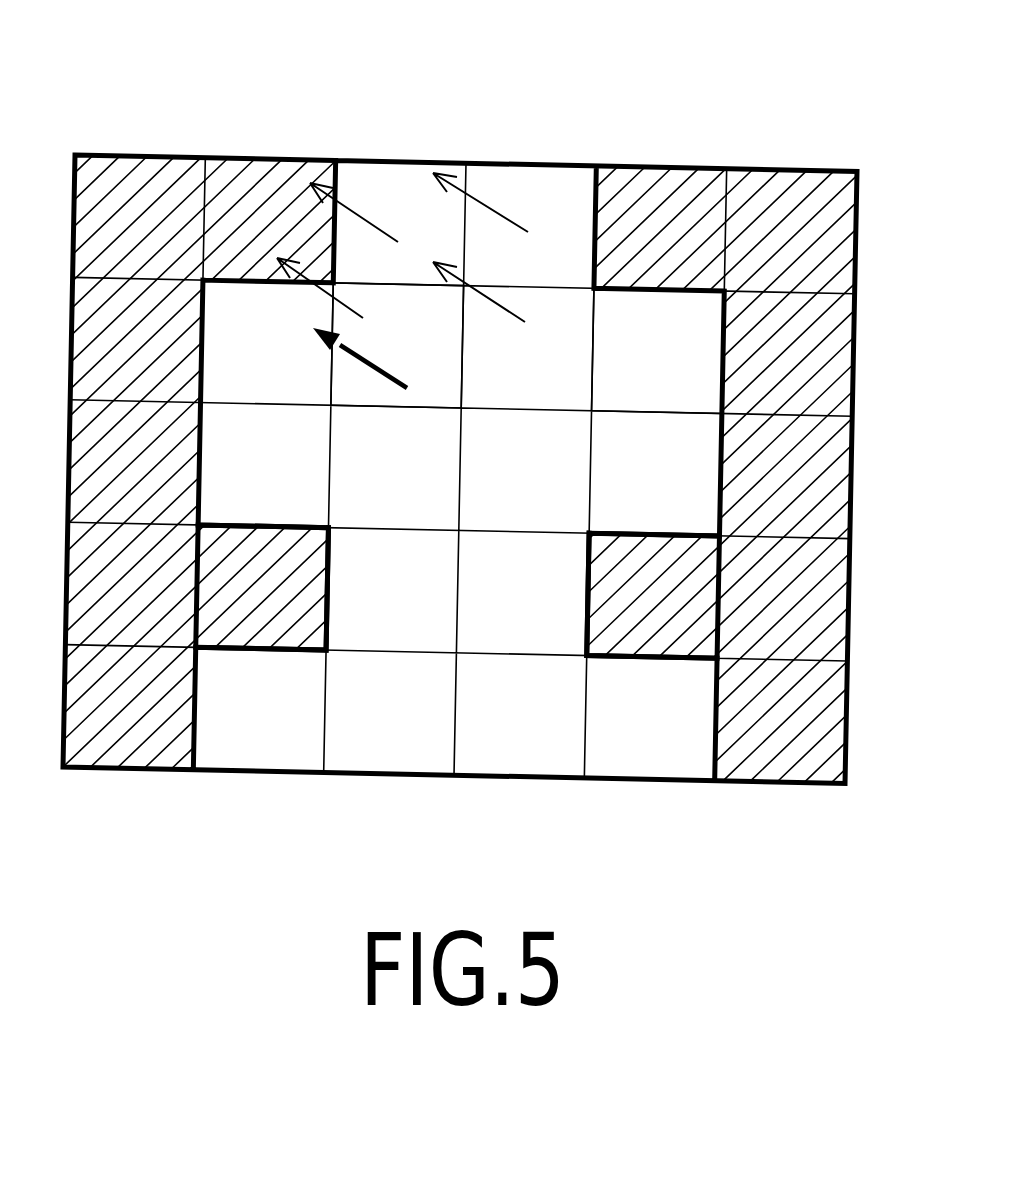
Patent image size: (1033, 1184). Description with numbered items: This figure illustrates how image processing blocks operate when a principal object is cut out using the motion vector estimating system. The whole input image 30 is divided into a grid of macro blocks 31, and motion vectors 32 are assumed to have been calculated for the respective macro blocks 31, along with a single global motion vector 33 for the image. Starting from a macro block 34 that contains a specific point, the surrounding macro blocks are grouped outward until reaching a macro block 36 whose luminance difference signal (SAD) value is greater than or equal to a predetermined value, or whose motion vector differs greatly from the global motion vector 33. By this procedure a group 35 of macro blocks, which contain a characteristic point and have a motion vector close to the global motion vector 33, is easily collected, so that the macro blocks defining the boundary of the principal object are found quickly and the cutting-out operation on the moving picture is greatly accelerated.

The whole input image 30 is at (735, 137).
The macro block 31 is at (246, 166).
The motion vector 32 is at (347, 307).
The global motion vector 33 is at (362, 360).
The macro block containing a specific point 34 is at (465, 364).
The group of macro blocks 35 is at (719, 366).
The macro block having a large SAD value or motion vector difference 36 is at (327, 581).